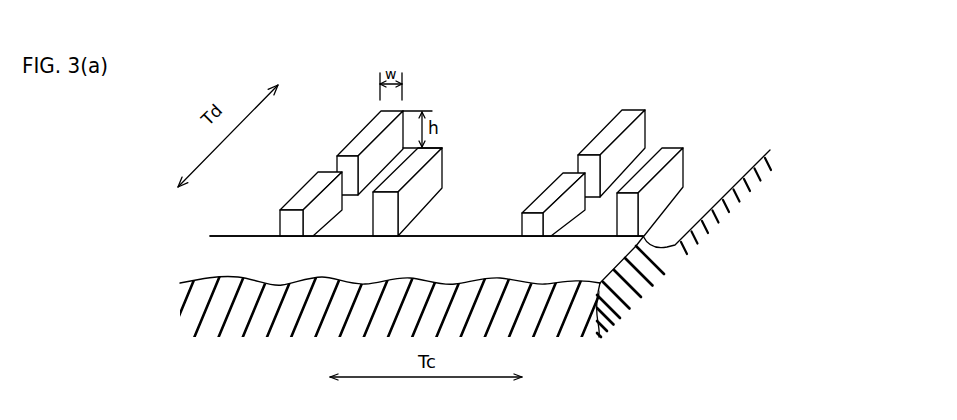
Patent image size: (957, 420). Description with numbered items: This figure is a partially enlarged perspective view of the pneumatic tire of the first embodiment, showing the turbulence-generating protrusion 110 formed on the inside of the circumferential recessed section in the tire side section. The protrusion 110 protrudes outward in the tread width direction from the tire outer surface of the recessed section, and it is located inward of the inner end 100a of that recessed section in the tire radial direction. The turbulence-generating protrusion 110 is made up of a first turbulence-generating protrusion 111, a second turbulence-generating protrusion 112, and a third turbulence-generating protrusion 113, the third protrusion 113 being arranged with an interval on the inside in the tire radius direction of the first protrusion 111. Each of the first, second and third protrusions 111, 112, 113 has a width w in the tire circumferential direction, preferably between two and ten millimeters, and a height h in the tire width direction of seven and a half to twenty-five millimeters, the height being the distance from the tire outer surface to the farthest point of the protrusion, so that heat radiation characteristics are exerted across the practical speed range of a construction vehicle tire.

The inner end of circumferential recessed section 100a is at (585, 237).
The turbulence-generating protrusion 110 is at (443, 152).
The first turbulence-generating protrusion 111 is at (406, 104).
The second turbulence-generating protrusion 112 is at (443, 142).
The third turbulence-generating protrusion 113 is at (290, 201).